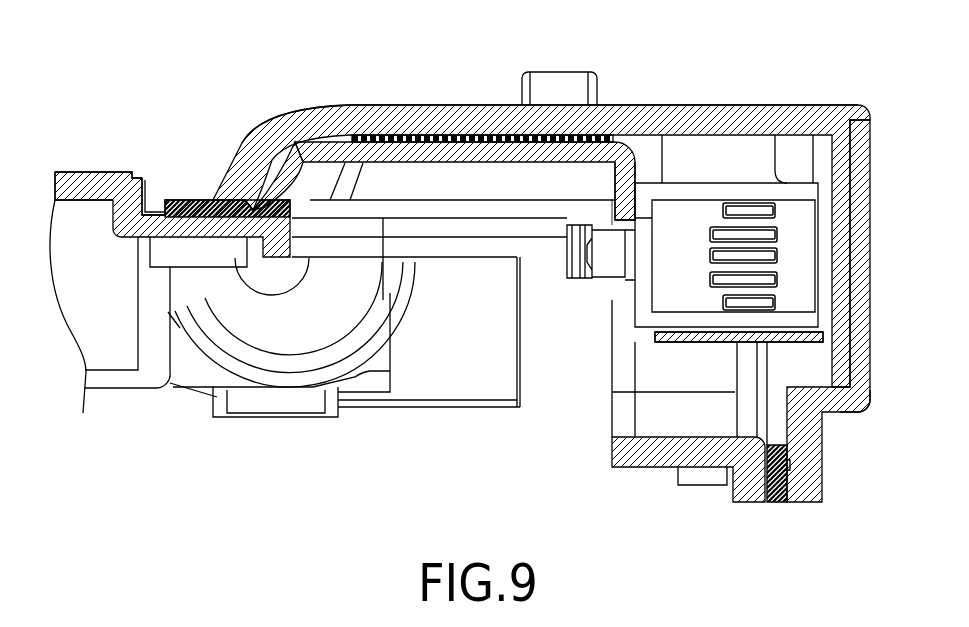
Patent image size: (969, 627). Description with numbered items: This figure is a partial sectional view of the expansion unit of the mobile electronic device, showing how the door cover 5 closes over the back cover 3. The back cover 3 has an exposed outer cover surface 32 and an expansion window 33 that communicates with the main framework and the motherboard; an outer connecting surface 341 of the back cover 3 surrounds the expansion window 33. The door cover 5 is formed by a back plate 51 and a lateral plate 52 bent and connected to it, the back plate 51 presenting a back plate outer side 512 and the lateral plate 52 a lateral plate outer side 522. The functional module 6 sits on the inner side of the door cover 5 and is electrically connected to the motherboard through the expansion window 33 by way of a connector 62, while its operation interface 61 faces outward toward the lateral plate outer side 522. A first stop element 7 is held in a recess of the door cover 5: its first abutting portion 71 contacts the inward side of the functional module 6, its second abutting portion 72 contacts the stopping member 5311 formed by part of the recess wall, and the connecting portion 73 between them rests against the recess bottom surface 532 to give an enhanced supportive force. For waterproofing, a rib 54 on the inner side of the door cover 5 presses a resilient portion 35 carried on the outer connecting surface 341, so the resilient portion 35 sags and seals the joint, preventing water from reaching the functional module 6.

The back cover 3 is at (68, 166).
The outer cover surface 32 is at (95, 170).
The outer connecting surface 341 is at (158, 203).
The back plate 51 is at (173, 183).
The resilient portion 35 is at (205, 203).
The rib 54 is at (252, 207).
The stopping member 5311 is at (286, 142).
The second abutting portion 72 is at (283, 180).
The recess bottom surface 532 is at (395, 146).
The first stop element 7 is at (431, 134).
The connecting portion 73 is at (472, 153).
The back plate outer side 512 is at (705, 104).
The first abutting portion 71 is at (628, 198).
The functional module 6 is at (744, 180).
The door cover 5 is at (816, 102).
The operation interface 61 is at (818, 257).
The connector 62 is at (578, 283).
The expansion window 33 is at (750, 405).
The lateral plate outer side 522 is at (868, 412).
The lateral plate 52 is at (813, 487).